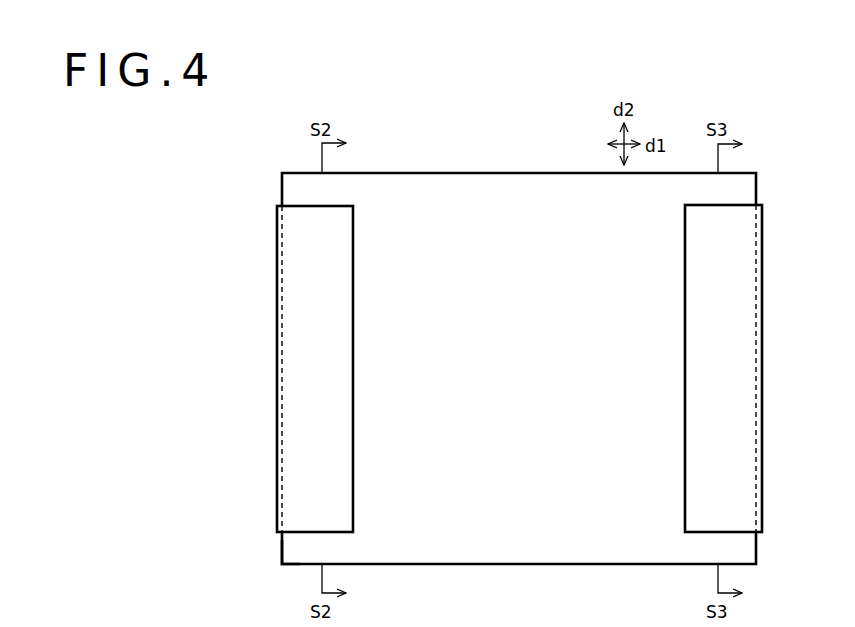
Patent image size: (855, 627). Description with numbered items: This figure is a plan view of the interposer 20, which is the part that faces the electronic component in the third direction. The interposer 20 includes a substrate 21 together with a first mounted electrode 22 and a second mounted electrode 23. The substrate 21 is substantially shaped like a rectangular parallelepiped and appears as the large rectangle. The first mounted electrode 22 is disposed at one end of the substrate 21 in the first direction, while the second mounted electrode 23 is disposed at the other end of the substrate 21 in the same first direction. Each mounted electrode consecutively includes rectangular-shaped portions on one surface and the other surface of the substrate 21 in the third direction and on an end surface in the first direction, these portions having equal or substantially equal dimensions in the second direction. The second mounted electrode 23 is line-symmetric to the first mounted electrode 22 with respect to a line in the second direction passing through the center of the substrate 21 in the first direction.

The interposer 20 is at (283, 190).
The substrate 21 is at (289, 548).
The first mounted electrode 22 is at (300, 368).
The second mounted electrode 23 is at (737, 368).